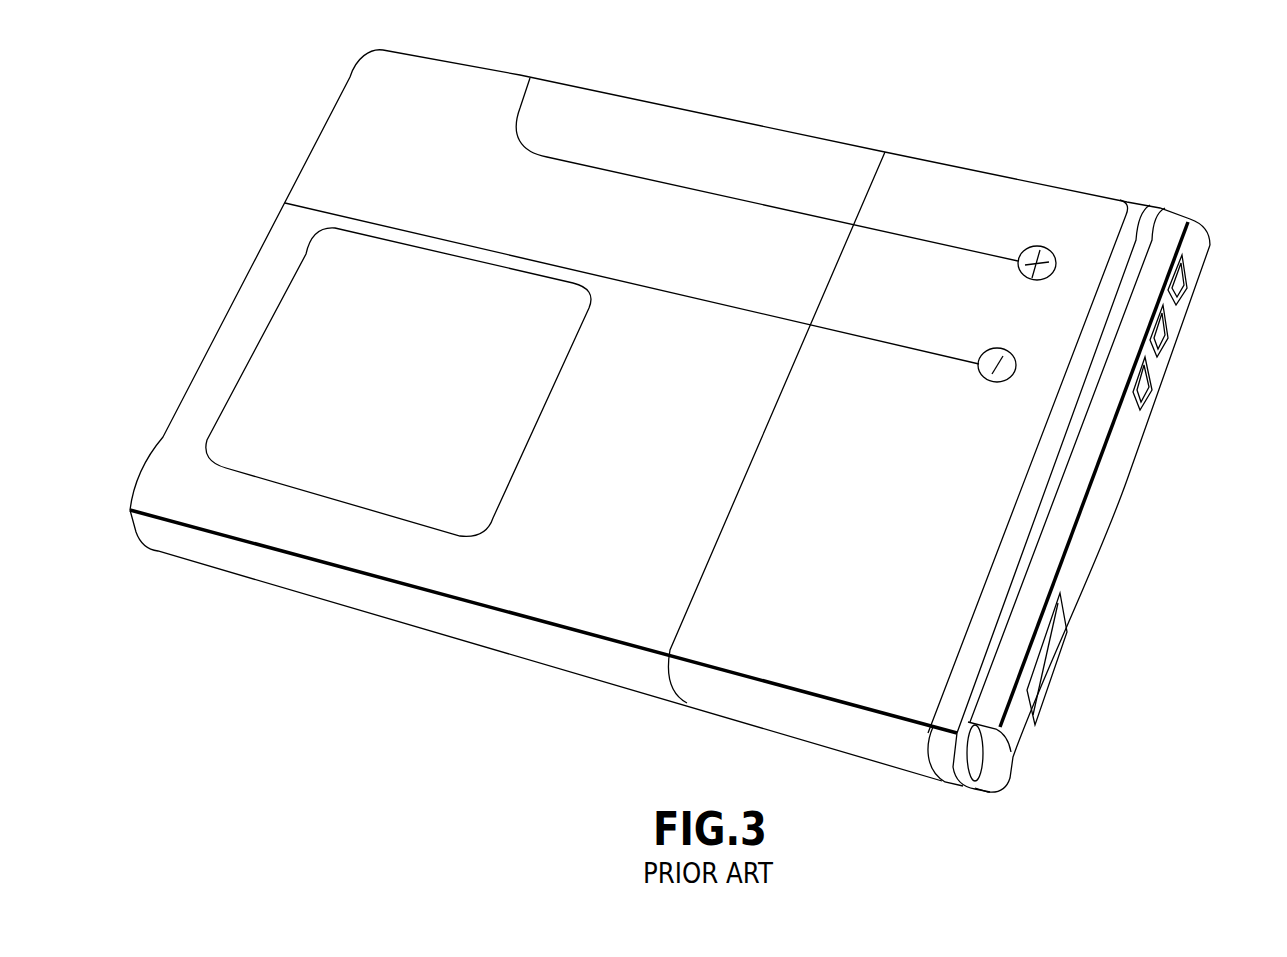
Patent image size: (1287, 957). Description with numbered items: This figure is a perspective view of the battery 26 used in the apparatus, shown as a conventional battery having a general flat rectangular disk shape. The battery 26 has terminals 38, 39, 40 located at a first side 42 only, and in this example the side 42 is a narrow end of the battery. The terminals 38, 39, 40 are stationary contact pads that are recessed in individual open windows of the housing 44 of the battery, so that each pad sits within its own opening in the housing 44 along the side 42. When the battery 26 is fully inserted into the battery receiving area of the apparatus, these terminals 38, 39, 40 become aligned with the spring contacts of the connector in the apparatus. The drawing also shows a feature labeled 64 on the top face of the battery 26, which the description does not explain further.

The battery 26 is at (986, 90).
The speaker opening 64 is at (737, 150).
The terminal 38 is at (1143, 405).
The terminal 39 is at (1190, 300).
The terminal 40 is at (1157, 343).
The first side 42 is at (1057, 630).
The housing 44 is at (1037, 727).